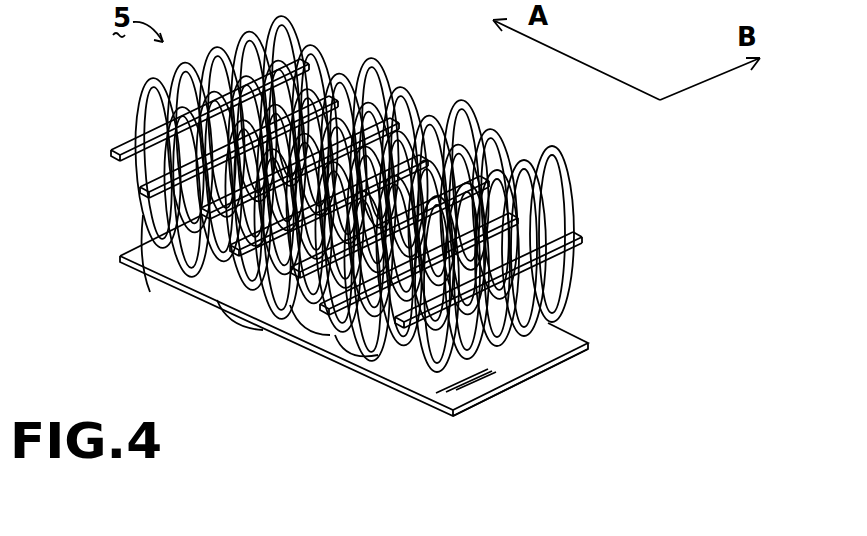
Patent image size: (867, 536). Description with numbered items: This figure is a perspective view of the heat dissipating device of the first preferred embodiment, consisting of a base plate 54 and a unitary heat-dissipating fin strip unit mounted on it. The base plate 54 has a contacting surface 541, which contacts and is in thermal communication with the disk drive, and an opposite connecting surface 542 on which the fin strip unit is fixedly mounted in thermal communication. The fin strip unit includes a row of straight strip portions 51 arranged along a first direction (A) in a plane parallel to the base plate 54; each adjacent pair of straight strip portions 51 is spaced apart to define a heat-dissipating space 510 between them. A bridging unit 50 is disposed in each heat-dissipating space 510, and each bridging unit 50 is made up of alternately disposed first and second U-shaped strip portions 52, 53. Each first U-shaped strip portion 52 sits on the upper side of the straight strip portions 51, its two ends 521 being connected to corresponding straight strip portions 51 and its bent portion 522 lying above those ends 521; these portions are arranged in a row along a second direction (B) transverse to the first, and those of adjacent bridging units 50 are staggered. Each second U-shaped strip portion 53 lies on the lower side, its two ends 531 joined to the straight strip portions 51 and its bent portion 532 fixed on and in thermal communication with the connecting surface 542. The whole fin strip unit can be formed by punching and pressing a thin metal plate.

The bridging unit 50 is at (337, 46).
The straight strip portion 51 is at (580, 248).
The first U-shaped strip portion 52 is at (467, 146).
The second U-shaped strip portion 53 is at (408, 375).
The base plate 54 is at (563, 360).
The heat-dissipating space 510 is at (353, 363).
The end of first U-shaped strip portion 521 is at (310, 340).
The bent portion of first U-shaped strip portion 522 is at (533, 150).
The end of second U-shaped strip portion 531 is at (187, 267).
The bent portion of second U-shaped strip portion 532 is at (260, 313).
The contacting surface 541 is at (473, 407).
The connecting surface 542 is at (498, 372).